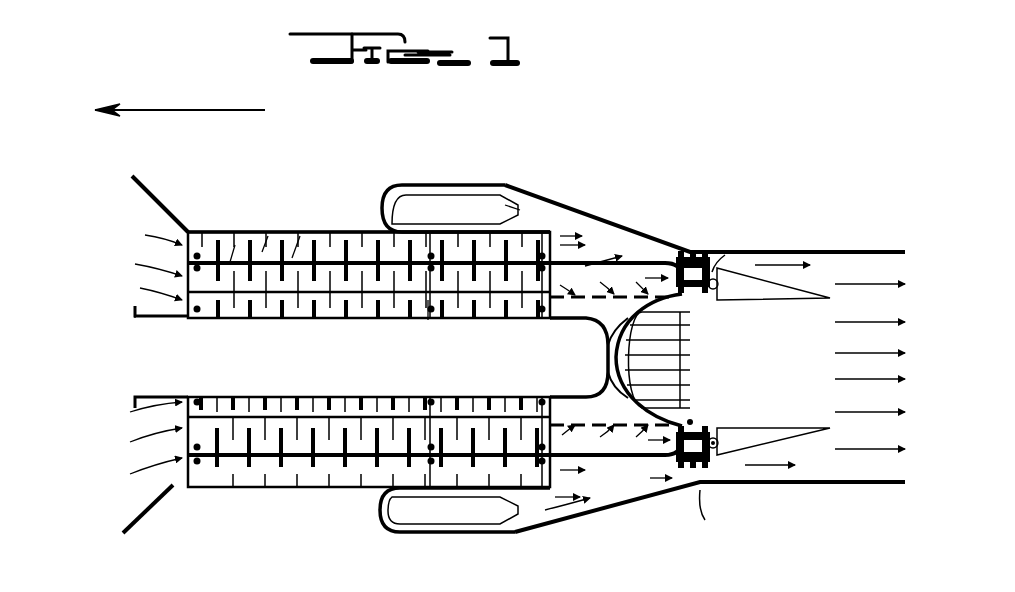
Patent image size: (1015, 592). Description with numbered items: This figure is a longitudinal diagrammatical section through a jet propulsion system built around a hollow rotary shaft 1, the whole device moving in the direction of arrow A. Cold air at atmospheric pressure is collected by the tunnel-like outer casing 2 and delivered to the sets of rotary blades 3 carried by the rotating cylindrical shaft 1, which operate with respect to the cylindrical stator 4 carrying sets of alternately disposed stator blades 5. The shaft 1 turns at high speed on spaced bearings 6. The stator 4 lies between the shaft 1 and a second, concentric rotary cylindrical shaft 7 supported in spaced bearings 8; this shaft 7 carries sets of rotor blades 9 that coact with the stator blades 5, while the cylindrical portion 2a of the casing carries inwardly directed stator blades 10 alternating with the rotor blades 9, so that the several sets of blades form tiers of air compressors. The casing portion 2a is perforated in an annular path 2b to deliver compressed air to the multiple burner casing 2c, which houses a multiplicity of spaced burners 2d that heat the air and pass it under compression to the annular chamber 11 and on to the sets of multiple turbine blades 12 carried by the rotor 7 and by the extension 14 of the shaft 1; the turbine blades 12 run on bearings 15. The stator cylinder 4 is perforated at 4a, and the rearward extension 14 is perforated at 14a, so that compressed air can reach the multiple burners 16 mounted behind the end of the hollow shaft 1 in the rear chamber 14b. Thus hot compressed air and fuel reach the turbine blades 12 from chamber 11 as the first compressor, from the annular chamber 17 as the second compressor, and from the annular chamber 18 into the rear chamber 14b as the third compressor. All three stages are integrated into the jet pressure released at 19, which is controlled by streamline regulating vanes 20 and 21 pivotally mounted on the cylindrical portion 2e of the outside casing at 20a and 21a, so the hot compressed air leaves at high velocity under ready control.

The arrow indicating direction of movement A is at (180, 97).
The hollow rotary shaft 1 is at (135, 320).
The outer casing 2 is at (150, 198).
The cylindrical portion of casing 2a is at (315, 238).
The annular perforations 2b is at (405, 240).
The multiple burner casing 2c is at (420, 190).
The burners 2d is at (520, 210).
The cylindrical portion of outside casing 2e is at (890, 252).
The rotary blades 3 is at (230, 318).
The cylindrical stator 4 is at (150, 277).
The annular perforations in stator cylinder 4a is at (668, 258).
The stator blades 5 is at (370, 234).
The bearings 6 is at (428, 320).
The second rotary cylindrical shaft 7 is at (300, 236).
The bearings 8 is at (165, 462).
The rotor blades 9 is at (235, 245).
The inwardly directed stator blades 10 is at (268, 236).
The annular chamber 11 is at (622, 240).
The multiple turbine blades 12 is at (705, 248).
The extension of rotary shaft 14 is at (700, 300).
The perforations in extension 14a is at (650, 350).
The rear chamber 14b is at (668, 368).
The bearings 15 is at (690, 418).
The multiple burners 16 is at (672, 386).
The annular chamber 17 is at (708, 262).
The annular chamber 18 is at (558, 330).
The jet pressure outlet 19 is at (890, 372).
The streamline regulating vane 20 is at (770, 292).
The pivot mounting 20a is at (728, 282).
The streamline regulating vane 21 is at (752, 440).
The pivot mounting 21a is at (722, 460).